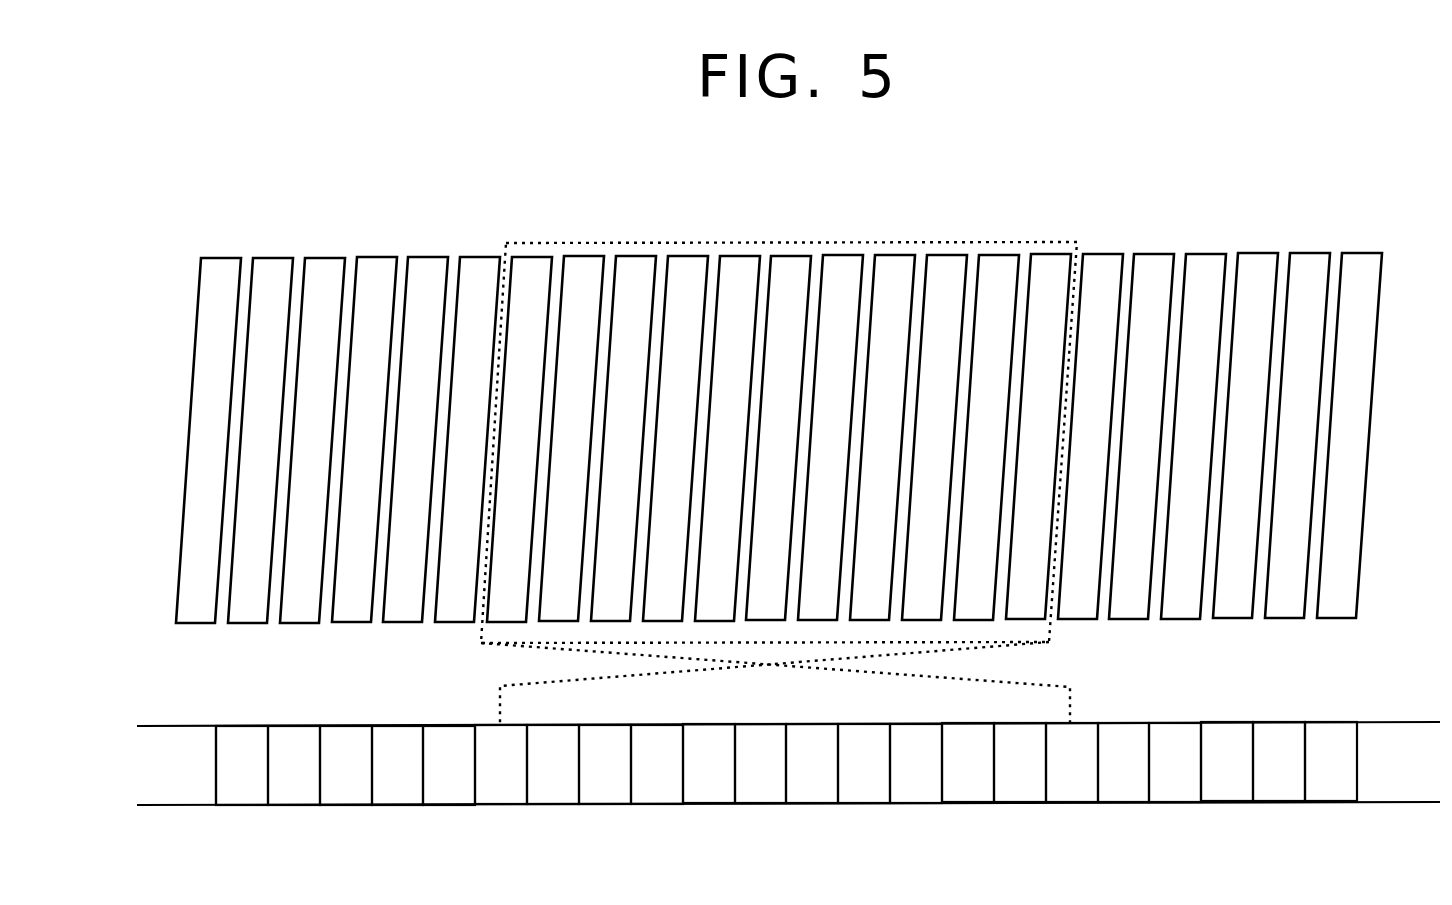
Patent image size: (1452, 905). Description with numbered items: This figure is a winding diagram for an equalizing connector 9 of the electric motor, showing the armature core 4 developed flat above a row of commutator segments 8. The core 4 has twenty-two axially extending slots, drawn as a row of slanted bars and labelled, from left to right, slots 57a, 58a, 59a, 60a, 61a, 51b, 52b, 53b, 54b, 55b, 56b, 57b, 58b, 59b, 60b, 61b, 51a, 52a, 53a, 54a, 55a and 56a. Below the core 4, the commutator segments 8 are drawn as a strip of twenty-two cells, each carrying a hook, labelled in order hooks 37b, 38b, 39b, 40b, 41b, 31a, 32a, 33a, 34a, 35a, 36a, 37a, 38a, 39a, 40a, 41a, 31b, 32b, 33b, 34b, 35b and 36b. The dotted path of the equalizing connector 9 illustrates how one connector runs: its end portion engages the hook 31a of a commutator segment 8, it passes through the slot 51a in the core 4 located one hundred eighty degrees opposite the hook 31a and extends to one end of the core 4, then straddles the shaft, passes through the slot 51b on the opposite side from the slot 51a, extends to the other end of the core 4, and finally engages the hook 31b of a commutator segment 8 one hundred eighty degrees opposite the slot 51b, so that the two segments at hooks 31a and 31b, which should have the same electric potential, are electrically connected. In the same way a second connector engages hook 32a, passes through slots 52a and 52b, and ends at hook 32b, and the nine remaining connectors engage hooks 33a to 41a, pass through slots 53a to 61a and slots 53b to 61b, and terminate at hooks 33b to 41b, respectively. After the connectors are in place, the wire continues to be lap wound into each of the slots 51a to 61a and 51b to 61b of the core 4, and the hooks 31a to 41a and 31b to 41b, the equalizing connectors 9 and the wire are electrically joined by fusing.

The core 4 is at (1375, 342).
The commutator segments 8 is at (1385, 787).
The equalizing connector 9 is at (1073, 689).
The slot 57a is at (260, 413).
The slot 58a is at (312, 413).
The slot 59a is at (364, 413).
The slot 60a is at (415, 413).
The slot 61a is at (467, 413).
The slot 51b is at (519, 413).
The slot 52b is at (571, 412).
The slot 53b is at (623, 412).
The slot 54b is at (675, 412).
The slot 55b is at (727, 412).
The slot 56b is at (778, 412).
The slot 57b is at (830, 412).
The slot 58b is at (882, 412).
The slot 59b is at (934, 412).
The slot 60b is at (986, 412).
The slot 61b is at (1038, 411).
The slot 51a is at (1090, 411).
The slot 52a is at (1141, 411).
The slot 53a is at (1193, 411).
The slot 54a is at (1245, 411).
The slot 55a is at (1297, 411).
The slot 56a is at (1349, 411).
The hook 37b is at (242, 765).
The hook 38b is at (294, 765).
The hook 39b is at (346, 765).
The hook 40b is at (397, 765).
The hook 41b is at (449, 765).
The hook 31a is at (501, 764).
The hook 32a is at (553, 764).
The hook 33a is at (605, 764).
The hook 34a is at (657, 764).
The hook 35a is at (709, 763).
The hook 36a is at (760, 763).
The hook 37a is at (812, 763).
The hook 38a is at (864, 763).
The hook 39a is at (916, 763).
The hook 40a is at (968, 762).
The hook 41a is at (1020, 762).
The hook 31b is at (1072, 762).
The hook 32b is at (1123, 762).
The hook 33b is at (1175, 762).
The hook 34b is at (1227, 761).
The hook 35b is at (1279, 761).
The hook 36b is at (1331, 761).